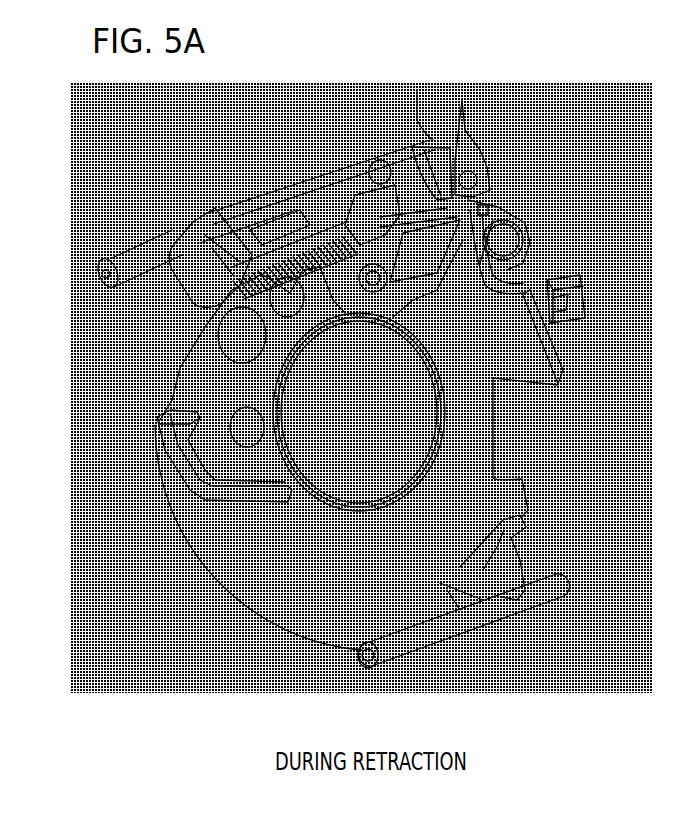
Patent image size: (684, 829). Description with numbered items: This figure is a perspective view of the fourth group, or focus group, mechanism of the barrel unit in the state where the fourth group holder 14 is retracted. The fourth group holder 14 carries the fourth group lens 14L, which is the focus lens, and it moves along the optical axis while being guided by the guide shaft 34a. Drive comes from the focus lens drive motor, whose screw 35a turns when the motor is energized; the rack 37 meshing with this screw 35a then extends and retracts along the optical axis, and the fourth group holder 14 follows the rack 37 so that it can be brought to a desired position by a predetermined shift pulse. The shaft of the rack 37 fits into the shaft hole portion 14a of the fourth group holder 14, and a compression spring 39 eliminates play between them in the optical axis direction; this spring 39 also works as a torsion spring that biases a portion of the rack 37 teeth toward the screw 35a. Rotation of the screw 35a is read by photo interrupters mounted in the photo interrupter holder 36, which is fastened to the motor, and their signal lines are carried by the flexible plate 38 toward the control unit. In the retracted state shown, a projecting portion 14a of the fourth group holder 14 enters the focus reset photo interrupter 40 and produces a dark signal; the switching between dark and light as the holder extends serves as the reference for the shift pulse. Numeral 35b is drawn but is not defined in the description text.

The fourth group holder 14 is at (277, 583).
The fourth group lens 14L is at (310, 438).
The shaft hole portion / projecting portion 14a is at (300, 290).
The guide shaft 34a is at (127, 247).
The screw 35a is at (240, 207).
The housing 35b is at (200, 212).
The photo interrupter holder 36 is at (327, 240).
The rack 37 is at (370, 228).
The flexible plate 38 is at (396, 138).
The compression spring 39 is at (497, 198).
The focus reset photo interrupter 40 is at (583, 290).